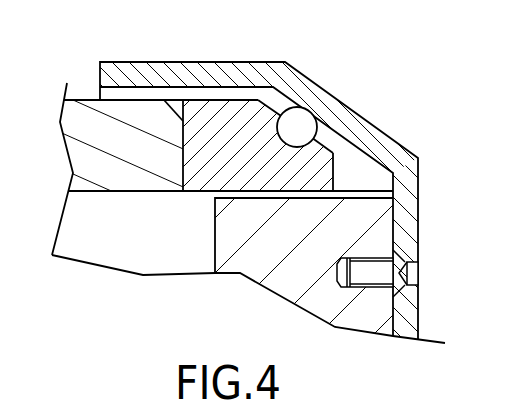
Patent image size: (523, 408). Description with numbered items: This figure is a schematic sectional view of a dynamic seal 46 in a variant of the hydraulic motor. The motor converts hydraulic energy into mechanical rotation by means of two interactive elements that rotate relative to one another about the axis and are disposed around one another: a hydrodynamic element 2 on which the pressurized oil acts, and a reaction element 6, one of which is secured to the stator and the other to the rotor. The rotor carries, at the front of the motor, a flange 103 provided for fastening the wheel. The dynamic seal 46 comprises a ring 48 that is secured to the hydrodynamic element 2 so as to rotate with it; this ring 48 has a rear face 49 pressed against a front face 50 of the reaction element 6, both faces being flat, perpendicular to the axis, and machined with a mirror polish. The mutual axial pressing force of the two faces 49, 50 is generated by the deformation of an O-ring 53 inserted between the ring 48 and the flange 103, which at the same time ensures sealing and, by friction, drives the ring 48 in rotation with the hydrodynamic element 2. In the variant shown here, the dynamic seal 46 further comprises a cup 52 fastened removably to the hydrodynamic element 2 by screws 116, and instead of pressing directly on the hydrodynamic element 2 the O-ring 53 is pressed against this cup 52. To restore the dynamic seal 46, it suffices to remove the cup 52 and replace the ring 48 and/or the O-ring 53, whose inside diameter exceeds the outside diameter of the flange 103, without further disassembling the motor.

The hydrodynamic element 2 is at (370, 219).
The reaction element 6 is at (85, 117).
The dynamic seal 46 is at (330, 138).
The ring 48 is at (289, 204).
The rear face 49 is at (183, 123).
The front face 50 is at (197, 125).
The cup 52 is at (398, 193).
The O-ring 53 is at (298, 126).
The flange 103 is at (254, 266).
The screws 116 is at (413, 272).